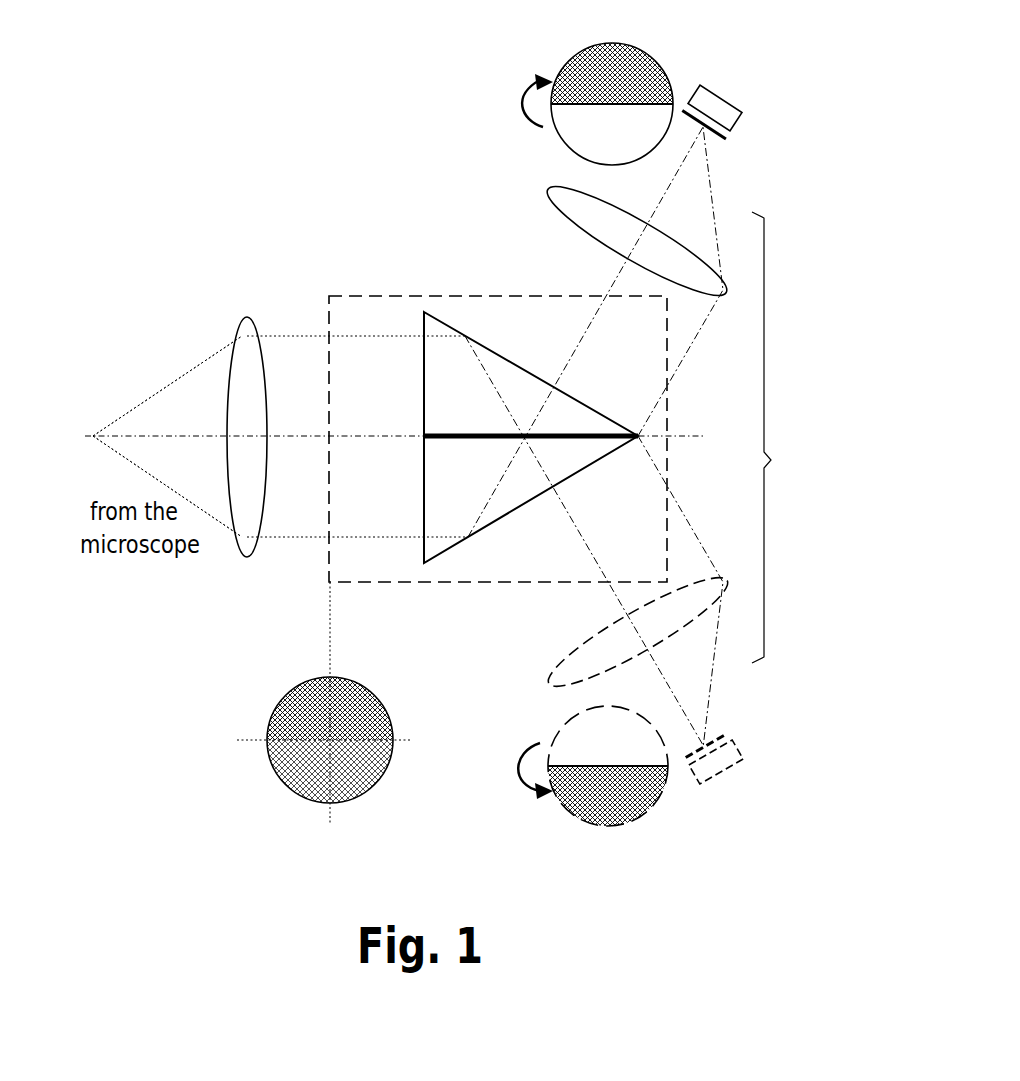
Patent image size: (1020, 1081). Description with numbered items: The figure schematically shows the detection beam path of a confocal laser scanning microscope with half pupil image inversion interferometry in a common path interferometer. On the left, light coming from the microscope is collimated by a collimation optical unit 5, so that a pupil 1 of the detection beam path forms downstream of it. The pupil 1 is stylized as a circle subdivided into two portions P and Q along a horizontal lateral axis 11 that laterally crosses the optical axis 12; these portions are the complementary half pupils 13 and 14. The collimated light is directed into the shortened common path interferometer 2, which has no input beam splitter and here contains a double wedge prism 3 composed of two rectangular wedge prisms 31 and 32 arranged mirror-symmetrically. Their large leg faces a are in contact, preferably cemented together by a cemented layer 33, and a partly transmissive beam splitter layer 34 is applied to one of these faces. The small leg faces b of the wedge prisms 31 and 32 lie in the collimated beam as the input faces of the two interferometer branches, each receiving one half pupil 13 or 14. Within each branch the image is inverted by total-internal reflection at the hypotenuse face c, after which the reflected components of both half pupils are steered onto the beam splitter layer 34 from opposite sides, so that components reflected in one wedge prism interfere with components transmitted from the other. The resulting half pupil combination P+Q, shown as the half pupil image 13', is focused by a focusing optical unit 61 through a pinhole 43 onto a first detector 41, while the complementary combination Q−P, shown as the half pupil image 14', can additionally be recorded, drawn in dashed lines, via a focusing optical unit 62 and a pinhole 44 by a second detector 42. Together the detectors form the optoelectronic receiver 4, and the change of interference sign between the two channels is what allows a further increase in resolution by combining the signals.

The pupil 1 is at (345, 805).
The common path interferometer 2 is at (377, 295).
The double wedge prism 3 is at (425, 311).
The receiver 4 is at (772, 437).
The collimation optical unit 5 is at (245, 320).
The lateral axis 11 is at (262, 742).
The optical axis 12 is at (185, 430).
The half pupil 13 is at (283, 738).
The half pupil 14 is at (283, 756).
The half pupil image 13' is at (571, 93).
The half pupil image 14' is at (580, 780).
The wedge prism 31 is at (520, 430).
The wedge prism 32 is at (438, 547).
The cemented layer 33 is at (432, 430).
The partly transmissive beam splitter layer 34 is at (462, 438).
The first detector 41 is at (735, 128).
The second detector 42 is at (735, 748).
The pinhole 43 is at (680, 112).
The pinhole 44 is at (680, 762).
The focusing optical unit 61 is at (548, 190).
The focusing optical unit 62 is at (550, 685).
The large leg face a is at (425, 434).
The small leg face b is at (490, 427).
The hypotenuse face c is at (543, 380).